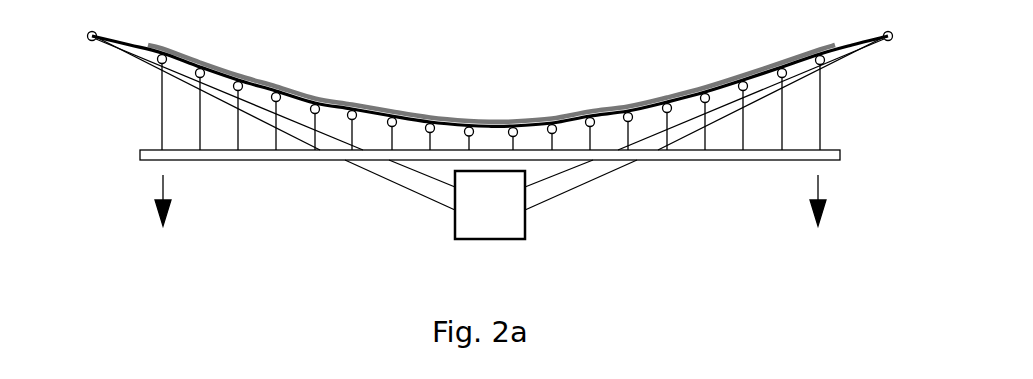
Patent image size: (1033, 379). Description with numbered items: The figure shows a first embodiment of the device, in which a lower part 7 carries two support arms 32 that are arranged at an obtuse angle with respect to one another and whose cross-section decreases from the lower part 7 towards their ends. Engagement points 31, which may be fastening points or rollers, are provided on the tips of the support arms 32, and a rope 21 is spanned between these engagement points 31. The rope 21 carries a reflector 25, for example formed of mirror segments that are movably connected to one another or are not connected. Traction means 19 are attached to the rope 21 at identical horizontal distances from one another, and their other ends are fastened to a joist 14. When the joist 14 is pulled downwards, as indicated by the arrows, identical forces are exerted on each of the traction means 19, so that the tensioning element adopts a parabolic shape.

The lower part 7 is at (535, 222).
The joist 14 is at (257, 162).
The traction means 19 is at (200, 115).
The rope 21 is at (112, 43).
The reflector 25 is at (762, 68).
The engagement points 31 is at (87, 36).
The support arms 32 is at (392, 171).